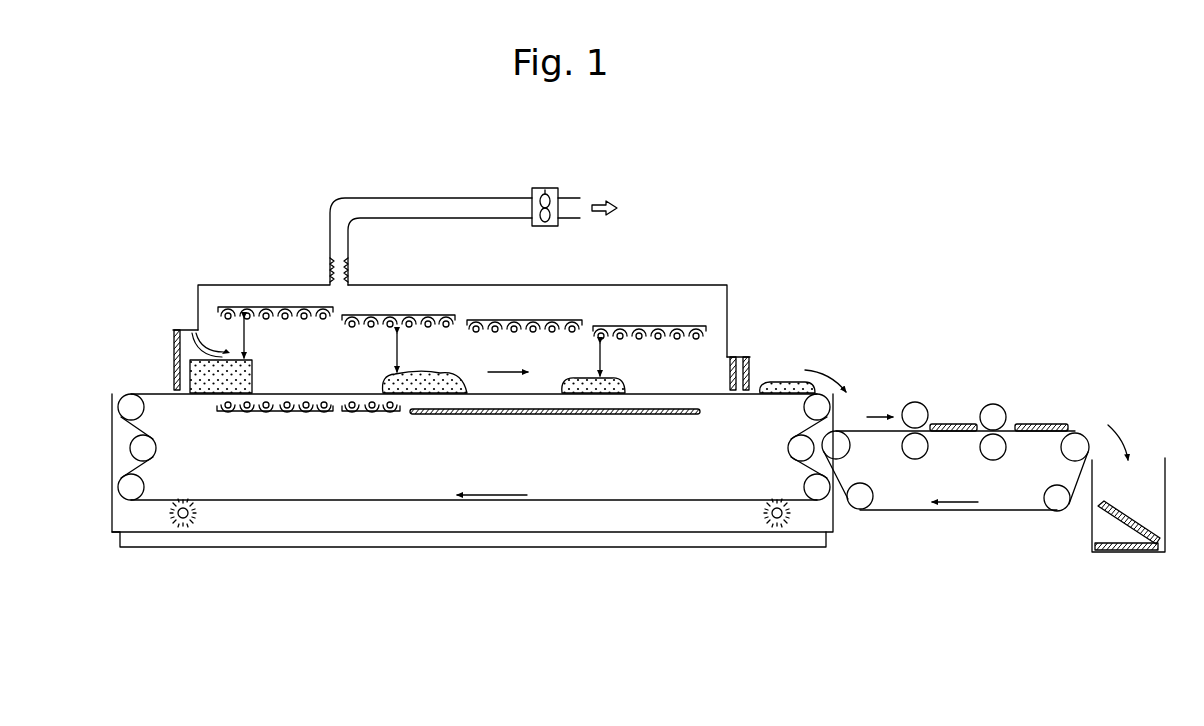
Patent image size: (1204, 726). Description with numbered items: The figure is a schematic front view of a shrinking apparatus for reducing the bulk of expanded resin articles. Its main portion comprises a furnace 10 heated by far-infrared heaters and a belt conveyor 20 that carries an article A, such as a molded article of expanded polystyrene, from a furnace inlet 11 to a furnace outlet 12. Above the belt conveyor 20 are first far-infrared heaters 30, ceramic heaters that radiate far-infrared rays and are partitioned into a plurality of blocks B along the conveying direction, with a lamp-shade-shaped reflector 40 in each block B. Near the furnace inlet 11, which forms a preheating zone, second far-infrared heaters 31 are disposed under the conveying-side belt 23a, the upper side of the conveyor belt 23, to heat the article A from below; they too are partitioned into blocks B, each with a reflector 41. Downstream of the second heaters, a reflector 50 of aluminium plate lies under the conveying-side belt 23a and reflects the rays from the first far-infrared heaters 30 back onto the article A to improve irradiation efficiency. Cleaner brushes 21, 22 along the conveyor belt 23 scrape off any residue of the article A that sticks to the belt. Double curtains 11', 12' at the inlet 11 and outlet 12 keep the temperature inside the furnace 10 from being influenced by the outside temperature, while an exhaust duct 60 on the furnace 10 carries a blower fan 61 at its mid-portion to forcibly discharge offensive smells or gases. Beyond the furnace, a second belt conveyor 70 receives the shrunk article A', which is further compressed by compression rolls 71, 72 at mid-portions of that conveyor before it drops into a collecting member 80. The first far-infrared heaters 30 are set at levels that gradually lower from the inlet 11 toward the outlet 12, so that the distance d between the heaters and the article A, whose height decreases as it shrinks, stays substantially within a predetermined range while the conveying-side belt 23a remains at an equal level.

The furnace 10 is at (714, 286).
The furnace inlet 11 is at (127, 421).
The double curtain 11' is at (179, 320).
The furnace outlet 12 is at (791, 341).
The double curtain 12' is at (768, 335).
The belt conveyor 20 is at (678, 505).
The cleaner brush 21 is at (779, 528).
The cleaner brush 22 is at (186, 526).
The conveyor belt 23 is at (342, 502).
The conveying-side belt 23a is at (506, 393).
The first far-infrared heater 30 is at (266, 313).
The second far-infrared heater 31 is at (263, 414).
The reflector 40 is at (285, 307).
The reflector 41 is at (318, 414).
The reflector 50 is at (612, 415).
The exhaust duct 60 is at (486, 206).
The blower fan 61 is at (550, 195).
The belt conveyor 70 is at (1007, 432).
The compression roll 71 is at (915, 405).
The compression roll 72 is at (918, 450).
The collecting member 80 is at (1124, 553).
The article A is at (407, 372).
The shrunk article A' is at (829, 352).
The block B is at (302, 307).
The distance d is at (434, 347).